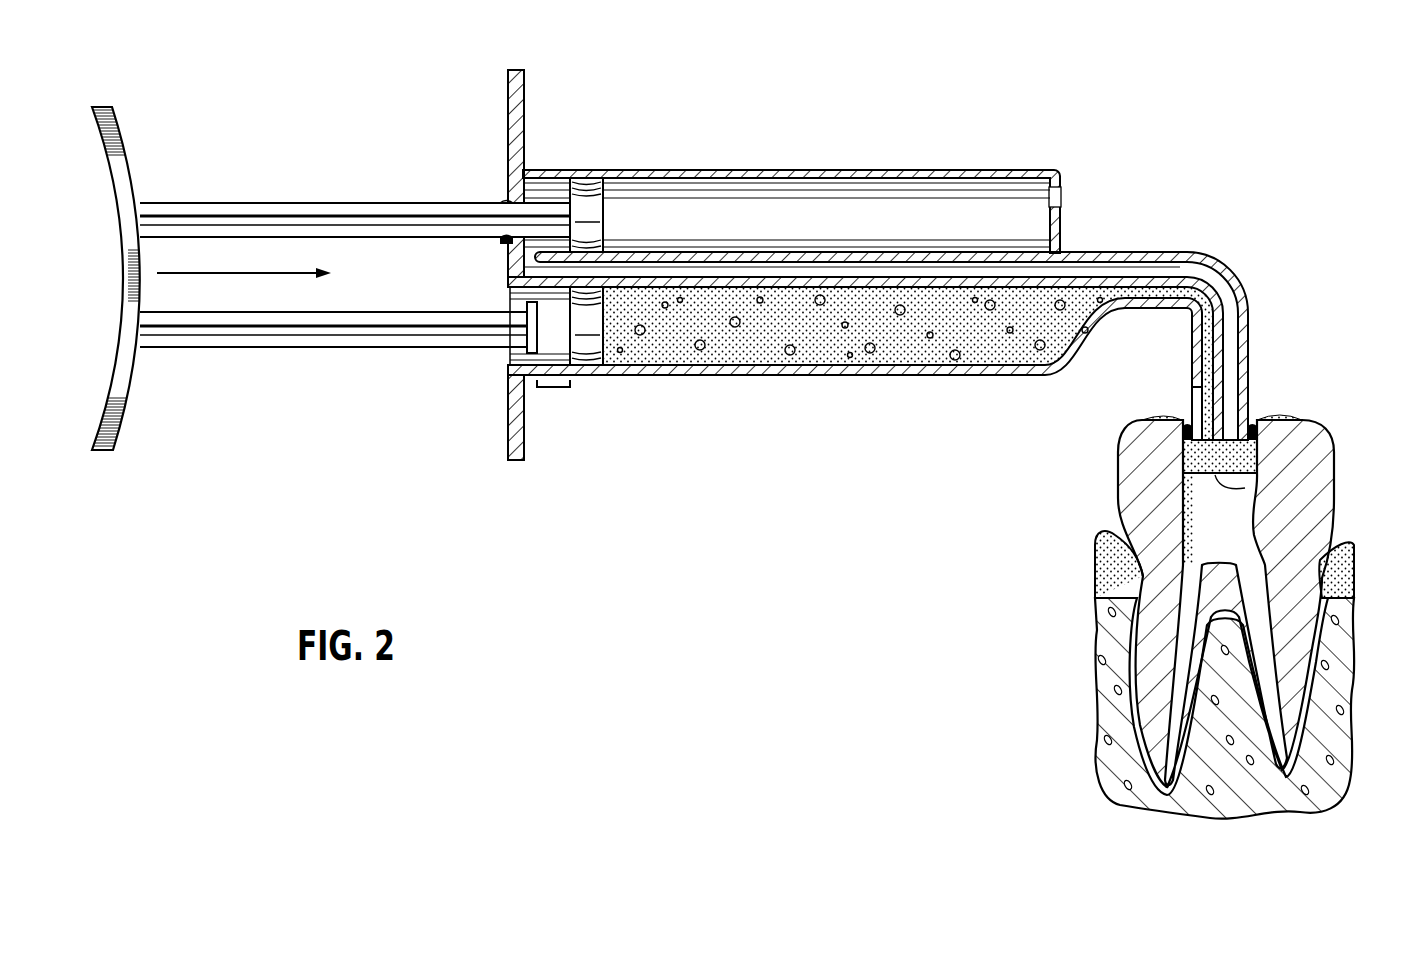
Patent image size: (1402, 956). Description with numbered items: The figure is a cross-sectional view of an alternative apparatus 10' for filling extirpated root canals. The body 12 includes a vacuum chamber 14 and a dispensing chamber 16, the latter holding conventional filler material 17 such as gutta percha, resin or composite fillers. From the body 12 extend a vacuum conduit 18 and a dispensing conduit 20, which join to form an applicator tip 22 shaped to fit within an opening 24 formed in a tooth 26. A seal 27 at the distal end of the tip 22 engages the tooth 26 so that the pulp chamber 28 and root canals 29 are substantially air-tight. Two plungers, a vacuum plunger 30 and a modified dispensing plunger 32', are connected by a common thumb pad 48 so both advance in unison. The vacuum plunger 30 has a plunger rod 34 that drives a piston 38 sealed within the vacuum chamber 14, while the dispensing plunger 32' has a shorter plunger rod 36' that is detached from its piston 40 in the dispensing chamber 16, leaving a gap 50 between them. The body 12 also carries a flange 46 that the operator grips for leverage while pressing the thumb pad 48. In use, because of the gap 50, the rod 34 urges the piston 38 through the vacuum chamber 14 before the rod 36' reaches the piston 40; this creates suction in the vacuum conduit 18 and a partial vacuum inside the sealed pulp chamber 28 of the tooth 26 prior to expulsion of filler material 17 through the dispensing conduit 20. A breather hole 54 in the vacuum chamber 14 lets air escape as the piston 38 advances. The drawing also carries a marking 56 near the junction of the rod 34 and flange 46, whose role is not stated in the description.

The apparatus 10' is at (699, 262).
The body 12 is at (840, 168).
The vacuum chamber 14 is at (873, 203).
The dispensing chamber 16 is at (836, 358).
The filler material 17 is at (890, 352).
The vacuum conduit 18 is at (1235, 305).
The dispensing conduit 20 is at (1203, 392).
The applicator tip 22 is at (1247, 352).
The opening 24 is at (1207, 466).
The tooth 26 is at (1331, 449).
The seal 27 is at (1258, 432).
The pulp chamber 28 is at (1205, 520).
The root canals 29 is at (1185, 795).
The plunger 30 is at (359, 195).
The plunger 32' is at (338, 360).
The plunger rod 34 is at (252, 203).
The plunger rod 36' is at (333, 364).
The piston 38 is at (588, 210).
The piston 40 is at (590, 337).
The flange 46 is at (526, 86).
The thumb pad 48 is at (128, 157).
The gap 50 is at (553, 388).
The breather hole 54 is at (1062, 198).
The rod coupling 56 is at (508, 198).